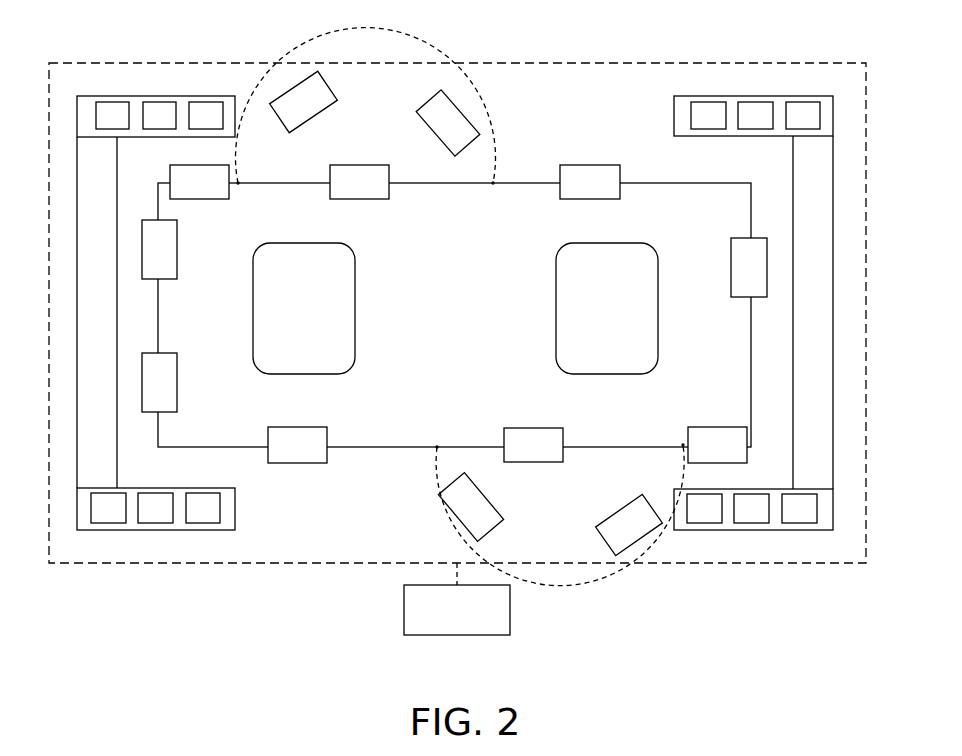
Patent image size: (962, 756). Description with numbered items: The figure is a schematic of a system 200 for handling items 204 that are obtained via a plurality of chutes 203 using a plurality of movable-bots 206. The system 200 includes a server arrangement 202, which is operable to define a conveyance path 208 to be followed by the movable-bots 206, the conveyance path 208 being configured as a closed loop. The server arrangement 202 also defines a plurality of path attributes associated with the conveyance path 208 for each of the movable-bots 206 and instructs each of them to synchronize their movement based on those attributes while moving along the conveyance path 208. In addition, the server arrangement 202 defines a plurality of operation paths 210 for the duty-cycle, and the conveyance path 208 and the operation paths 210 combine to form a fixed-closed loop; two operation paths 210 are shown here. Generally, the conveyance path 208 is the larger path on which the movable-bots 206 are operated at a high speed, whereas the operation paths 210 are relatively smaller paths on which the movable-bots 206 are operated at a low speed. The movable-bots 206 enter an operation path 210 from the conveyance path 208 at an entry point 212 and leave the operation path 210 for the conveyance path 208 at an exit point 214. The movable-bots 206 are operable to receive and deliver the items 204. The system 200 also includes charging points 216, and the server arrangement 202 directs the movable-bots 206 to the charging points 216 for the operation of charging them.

The system 200 is at (457, 290).
The server arrangement 202 is at (438, 623).
The chutes 203 is at (801, 332).
The items 204 is at (455, 321).
The movable-bots 206 is at (455, 120).
The conveyance path 208 is at (454, 272).
The operation paths 210 is at (459, 306).
The entry point 212 is at (454, 314).
The exit point 214 is at (454, 315).
The charging points 216 is at (284, 320).